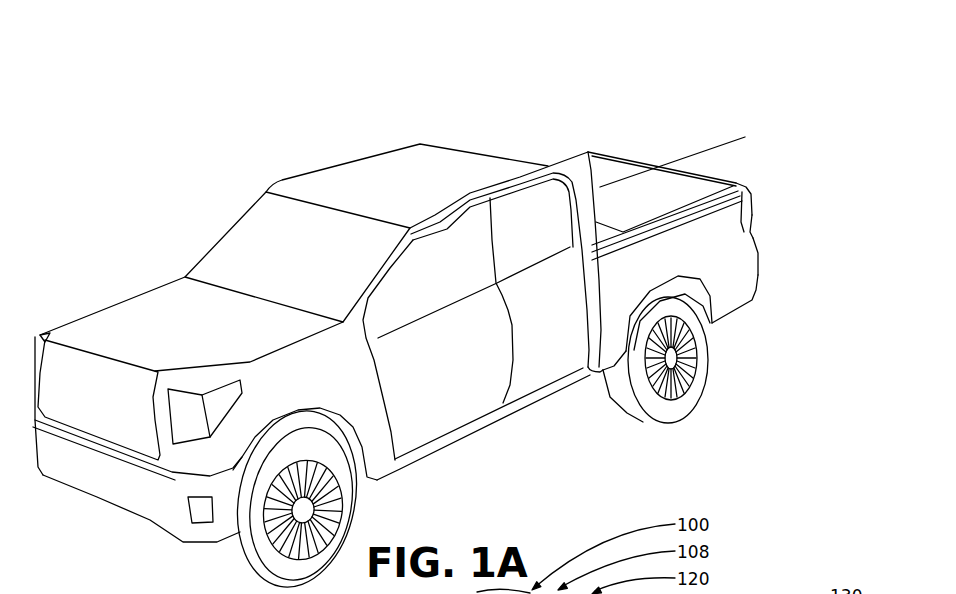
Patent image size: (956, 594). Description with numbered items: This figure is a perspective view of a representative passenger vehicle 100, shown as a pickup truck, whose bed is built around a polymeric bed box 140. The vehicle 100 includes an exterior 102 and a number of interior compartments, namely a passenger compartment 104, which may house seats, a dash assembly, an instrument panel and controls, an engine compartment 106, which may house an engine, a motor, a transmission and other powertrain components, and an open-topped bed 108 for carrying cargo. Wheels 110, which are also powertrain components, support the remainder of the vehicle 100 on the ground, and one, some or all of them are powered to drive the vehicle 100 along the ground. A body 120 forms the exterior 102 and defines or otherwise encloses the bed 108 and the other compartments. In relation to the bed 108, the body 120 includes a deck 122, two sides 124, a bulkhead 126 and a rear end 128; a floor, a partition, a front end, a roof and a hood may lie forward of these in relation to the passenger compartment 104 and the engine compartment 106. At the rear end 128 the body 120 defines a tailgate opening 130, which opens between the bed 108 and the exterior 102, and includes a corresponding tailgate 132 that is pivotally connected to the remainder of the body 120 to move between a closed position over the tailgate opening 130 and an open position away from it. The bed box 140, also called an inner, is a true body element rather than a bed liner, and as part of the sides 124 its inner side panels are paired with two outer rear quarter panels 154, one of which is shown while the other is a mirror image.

The vehicle 100 is at (596, 144).
The exterior 102 is at (462, 375).
The passenger compartment 104 is at (210, 267).
The engine compartment 106 is at (166, 292).
The bed 108 is at (613, 145).
The wheels 110 is at (700, 334).
The body 120 is at (628, 146).
The deck 122 is at (747, 191).
The sides 124 is at (702, 243).
The bulkhead 126 is at (753, 207).
The rear end 128 is at (757, 284).
The tailgate opening 130 is at (745, 137).
The tailgate 132 is at (738, 180).
The bed box 140 is at (648, 177).
The rear quarter panels 154 is at (710, 270).